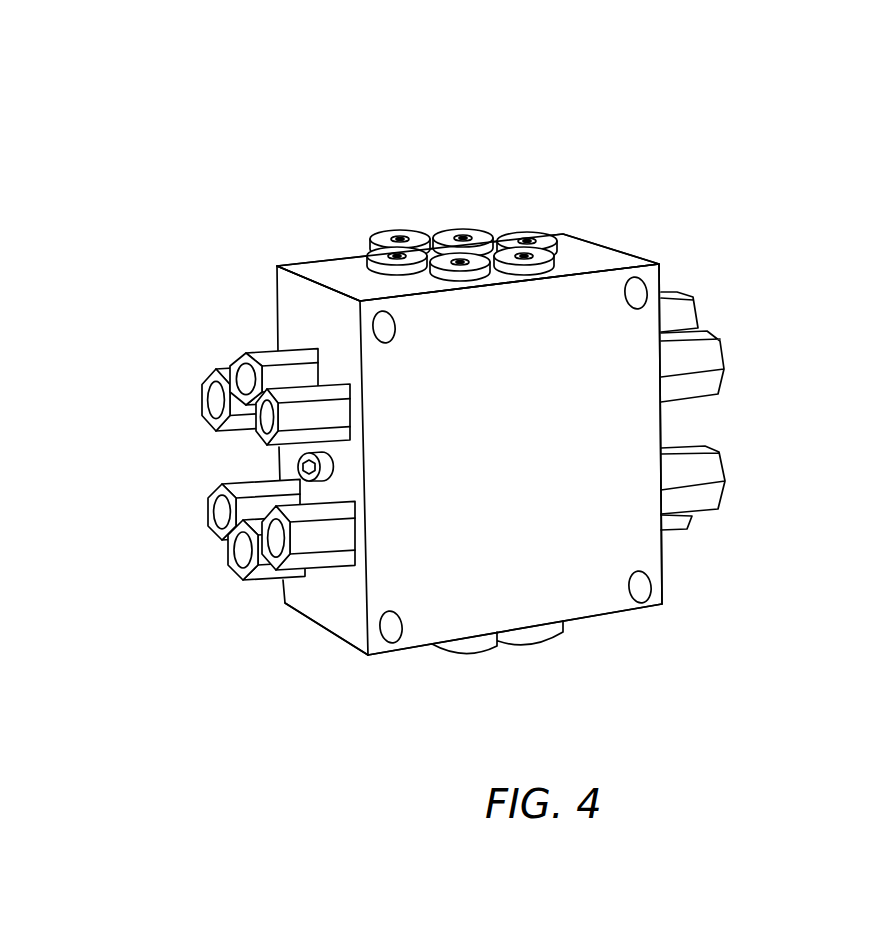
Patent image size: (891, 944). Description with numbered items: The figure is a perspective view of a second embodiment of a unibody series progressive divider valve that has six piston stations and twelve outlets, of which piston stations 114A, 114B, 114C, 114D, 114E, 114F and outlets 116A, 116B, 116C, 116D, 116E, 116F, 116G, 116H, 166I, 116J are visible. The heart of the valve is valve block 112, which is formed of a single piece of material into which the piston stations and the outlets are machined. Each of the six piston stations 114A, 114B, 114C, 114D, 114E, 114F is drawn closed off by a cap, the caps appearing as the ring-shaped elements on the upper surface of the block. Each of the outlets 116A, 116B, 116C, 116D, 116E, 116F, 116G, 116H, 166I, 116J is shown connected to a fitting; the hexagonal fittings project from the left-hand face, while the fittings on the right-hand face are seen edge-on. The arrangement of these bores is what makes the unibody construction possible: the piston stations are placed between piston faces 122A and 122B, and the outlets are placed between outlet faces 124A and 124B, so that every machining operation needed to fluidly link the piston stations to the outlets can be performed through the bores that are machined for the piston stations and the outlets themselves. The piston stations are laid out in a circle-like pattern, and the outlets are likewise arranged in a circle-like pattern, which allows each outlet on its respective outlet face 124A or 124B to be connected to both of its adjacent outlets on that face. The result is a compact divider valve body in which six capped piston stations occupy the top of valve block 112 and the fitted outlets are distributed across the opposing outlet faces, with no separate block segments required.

The valve block 112 is at (522, 447).
The piston station 114A is at (384, 231).
The piston station 114B is at (458, 227).
The piston station 114C is at (528, 228).
The piston station 114D is at (542, 246).
The piston station 114E is at (465, 282).
The piston station 114F is at (364, 249).
The outlet 116A is at (200, 403).
The outlet 116B is at (233, 348).
The outlet 116C is at (254, 445).
The outlet 116D is at (206, 523).
The outlet 116E is at (230, 578).
The outlet 116F is at (292, 569).
The outlet 116G is at (699, 297).
The outlet 116H is at (726, 369).
The side port fitting 166I is at (727, 478).
The outlet 116J is at (690, 532).
The piston face 122A is at (615, 258).
The piston face 122B is at (602, 614).
The outlet face 124A is at (344, 613).
The outlet face 124B is at (666, 572).